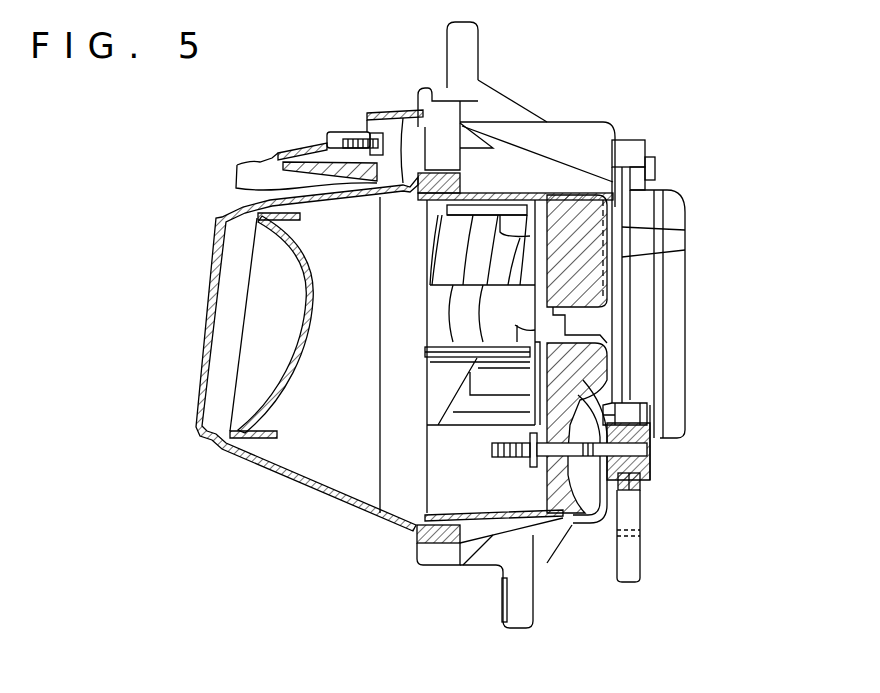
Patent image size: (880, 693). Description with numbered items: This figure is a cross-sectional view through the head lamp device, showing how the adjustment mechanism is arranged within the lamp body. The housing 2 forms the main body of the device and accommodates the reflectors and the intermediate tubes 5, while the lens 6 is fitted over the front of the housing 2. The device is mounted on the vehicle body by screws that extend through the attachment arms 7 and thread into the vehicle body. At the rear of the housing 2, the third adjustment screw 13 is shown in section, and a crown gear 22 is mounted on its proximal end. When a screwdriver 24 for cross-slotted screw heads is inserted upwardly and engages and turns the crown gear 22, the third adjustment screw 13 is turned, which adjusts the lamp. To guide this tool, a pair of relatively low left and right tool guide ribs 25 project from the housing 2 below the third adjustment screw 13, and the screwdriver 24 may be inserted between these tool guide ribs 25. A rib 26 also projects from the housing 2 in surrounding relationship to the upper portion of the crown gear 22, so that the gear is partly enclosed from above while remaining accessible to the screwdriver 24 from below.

The housing 2 is at (632, 368).
The intermediate tubes 5 is at (283, 232).
The lens 6 is at (196, 358).
The attachment arms 7 is at (447, 63).
The third adjustment screw 13 is at (652, 450).
The crown gear 22 is at (650, 477).
The screwdriver 24 is at (640, 562).
The tool guide ribs 25 is at (640, 503).
The rib 26 is at (635, 400).